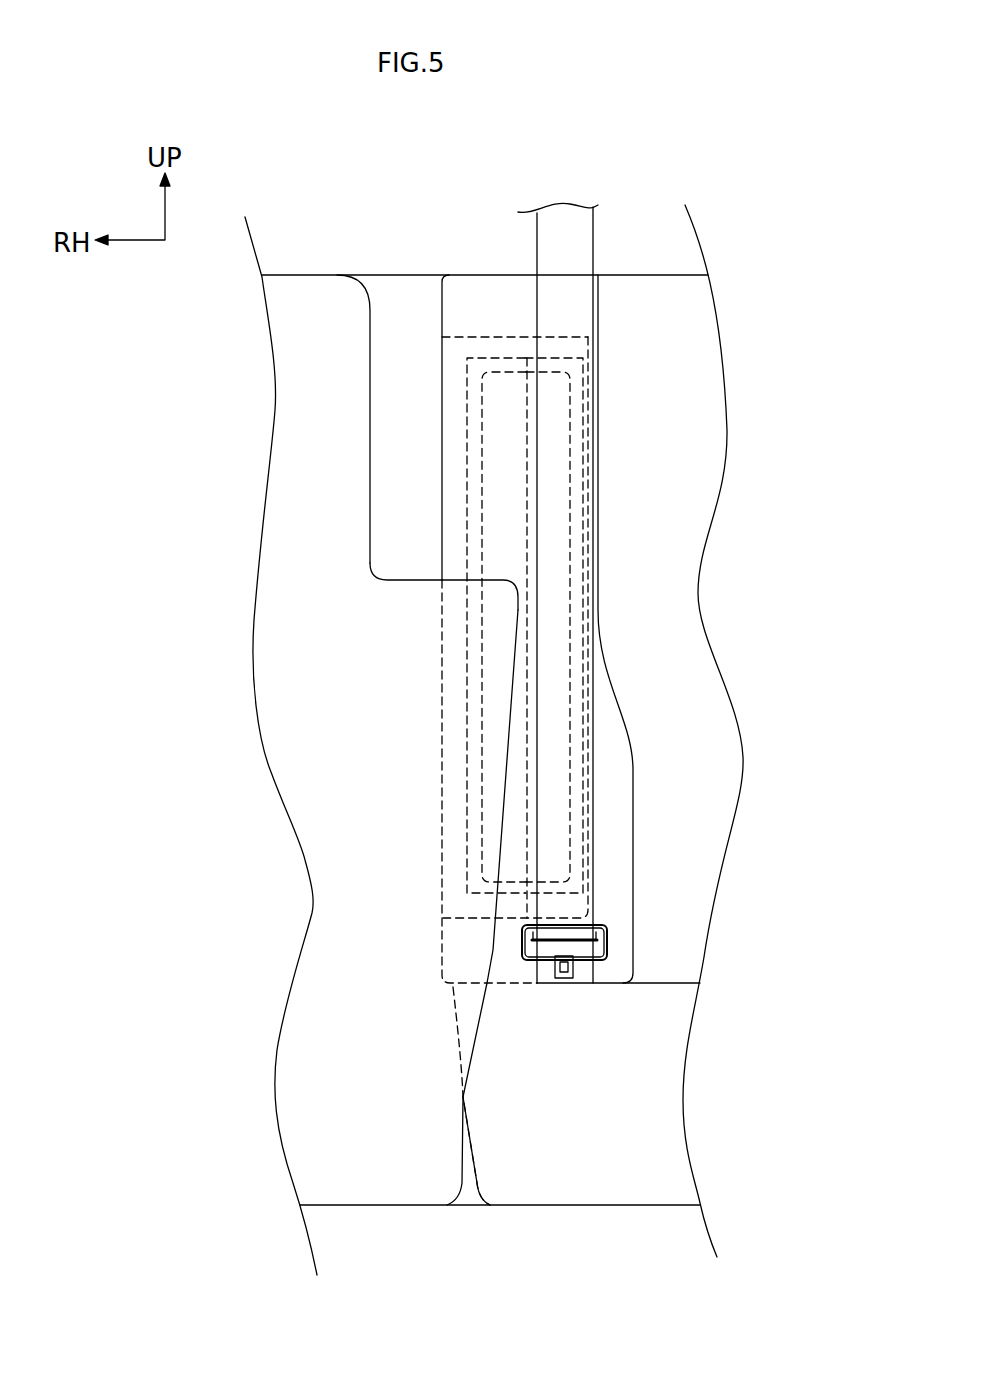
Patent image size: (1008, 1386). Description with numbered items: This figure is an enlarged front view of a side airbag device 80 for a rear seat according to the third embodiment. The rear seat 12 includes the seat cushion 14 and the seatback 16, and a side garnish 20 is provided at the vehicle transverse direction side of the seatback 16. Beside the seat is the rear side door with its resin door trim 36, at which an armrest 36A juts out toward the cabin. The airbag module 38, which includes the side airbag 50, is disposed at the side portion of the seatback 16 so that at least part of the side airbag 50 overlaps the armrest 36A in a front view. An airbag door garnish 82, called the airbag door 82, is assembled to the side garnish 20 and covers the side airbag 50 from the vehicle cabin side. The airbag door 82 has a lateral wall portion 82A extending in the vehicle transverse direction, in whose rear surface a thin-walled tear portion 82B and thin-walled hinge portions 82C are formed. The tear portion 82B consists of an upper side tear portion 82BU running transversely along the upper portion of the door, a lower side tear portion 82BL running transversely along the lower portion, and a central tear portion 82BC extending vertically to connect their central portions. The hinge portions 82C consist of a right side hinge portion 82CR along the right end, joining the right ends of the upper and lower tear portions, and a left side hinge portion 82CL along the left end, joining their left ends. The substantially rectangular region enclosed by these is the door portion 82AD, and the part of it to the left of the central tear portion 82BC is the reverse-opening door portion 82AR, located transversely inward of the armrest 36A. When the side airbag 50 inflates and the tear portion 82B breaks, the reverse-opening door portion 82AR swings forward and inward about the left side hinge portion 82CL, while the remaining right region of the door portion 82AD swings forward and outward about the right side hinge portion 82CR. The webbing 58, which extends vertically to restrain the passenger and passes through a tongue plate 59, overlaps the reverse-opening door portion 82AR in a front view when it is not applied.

The rear seat 12 is at (657, 275).
The seat cushion 14 is at (587, 1205).
The seatback 16 is at (735, 742).
The side garnish 20 is at (512, 298).
The door trim 36 is at (300, 275).
The armrest 36A is at (415, 578).
The airbag module 38 is at (326, 471).
The side airbag 50 is at (385, 469).
The webbing 58 is at (577, 312).
The tongue plate 59 is at (608, 950).
The side airbag device for a rear seat 80 is at (477, 275).
The airbag door garnish 82 is at (498, 660).
The lateral wall portion 82A is at (498, 627).
The door portion 82AD is at (497, 412).
The reverse-opening door portion 82AR is at (619, 627).
The tear portion 82B is at (487, 696).
The upper side tear portion 82BU is at (488, 356).
The central tear portion 82BC is at (527, 545).
The lower side tear portion 82BL is at (508, 893).
The hinge portions 82C is at (509, 625).
The right side hinge portion 82CR is at (467, 677).
The left side hinge portion 82CL is at (590, 750).